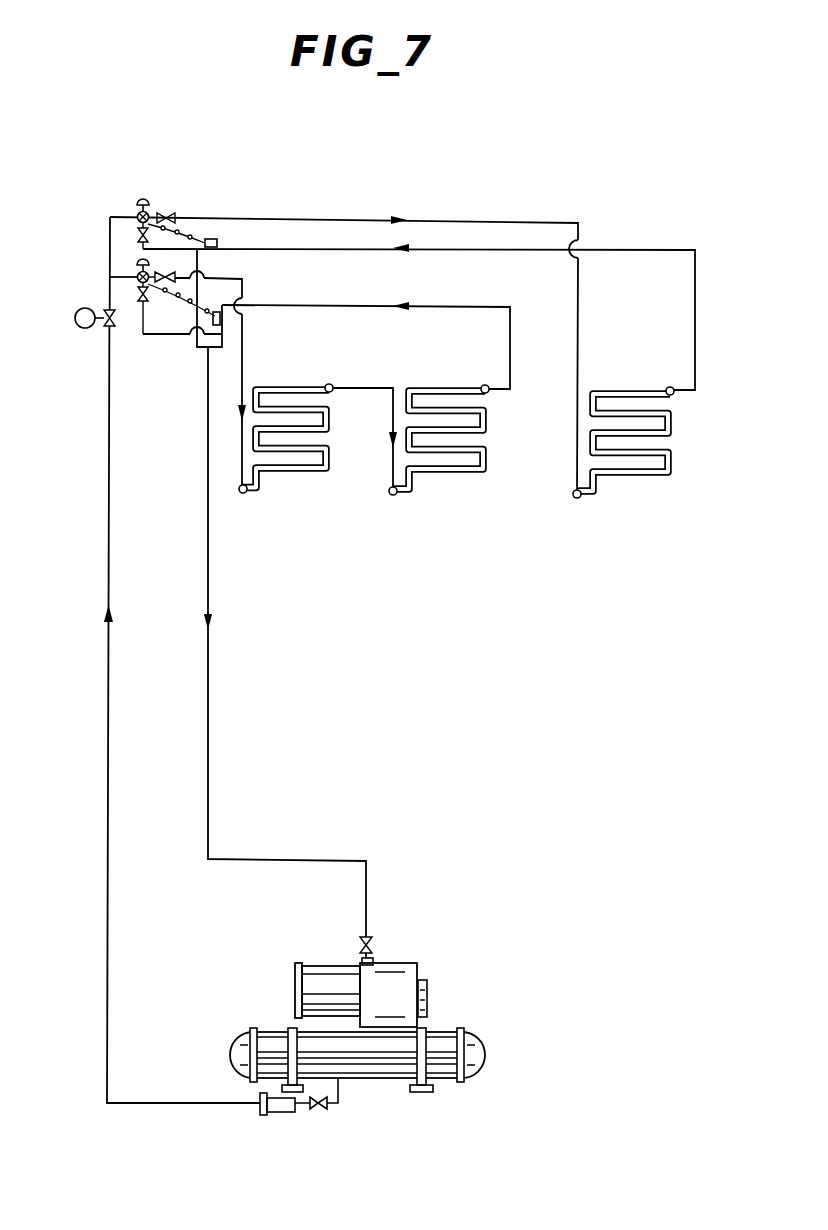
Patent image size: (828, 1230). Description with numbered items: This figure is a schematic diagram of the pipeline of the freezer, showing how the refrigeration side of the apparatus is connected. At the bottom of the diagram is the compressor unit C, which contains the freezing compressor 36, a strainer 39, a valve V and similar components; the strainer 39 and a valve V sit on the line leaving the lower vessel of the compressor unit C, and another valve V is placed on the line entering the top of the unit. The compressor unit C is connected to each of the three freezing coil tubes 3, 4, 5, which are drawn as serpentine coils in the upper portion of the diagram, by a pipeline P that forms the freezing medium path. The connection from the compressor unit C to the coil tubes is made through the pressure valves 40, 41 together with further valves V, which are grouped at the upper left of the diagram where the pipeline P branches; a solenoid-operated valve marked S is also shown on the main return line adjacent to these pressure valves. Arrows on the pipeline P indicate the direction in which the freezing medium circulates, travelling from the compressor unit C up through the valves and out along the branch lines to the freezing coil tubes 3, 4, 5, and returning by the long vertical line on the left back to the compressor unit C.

The freezing coil tube 3 is at (453, 489).
The freezing coil tube 4 is at (303, 488).
The freezing coil tube 5 is at (635, 490).
The freezing compressor 36 is at (388, 1069).
The strainer 39 is at (280, 1113).
The pressure valve 40 is at (143, 201).
The pressure valve 41 is at (140, 262).
The valve V is at (138, 240).
The freezing medium path P is at (245, 340).
The solenoid S is at (89, 318).
The compressor unit C is at (268, 975).